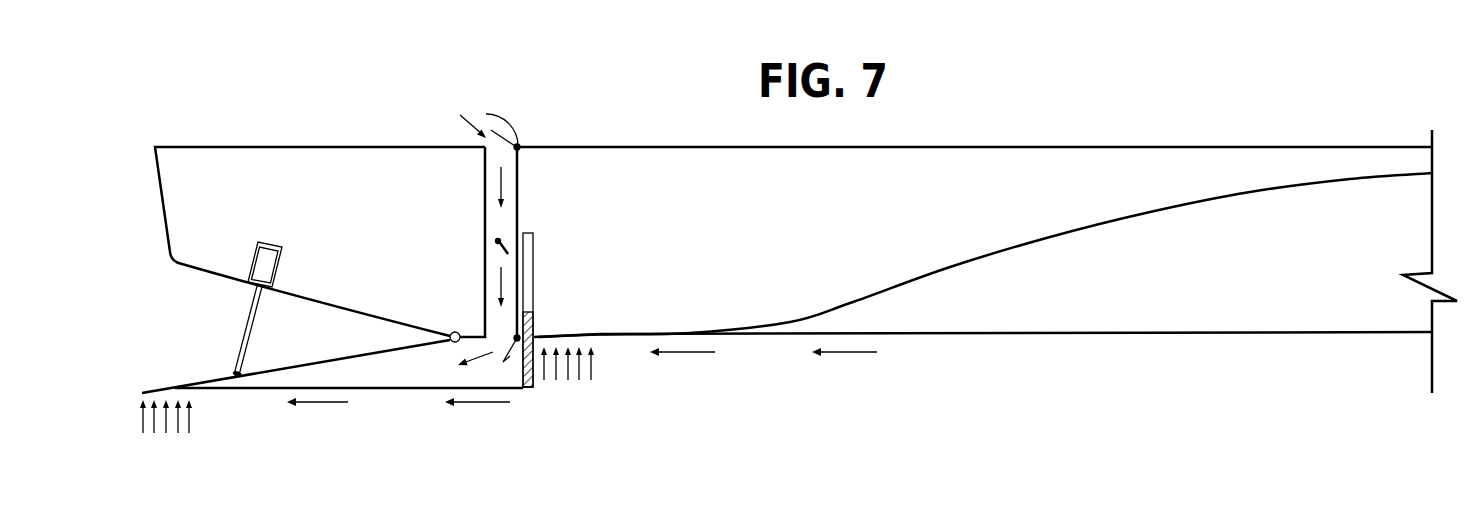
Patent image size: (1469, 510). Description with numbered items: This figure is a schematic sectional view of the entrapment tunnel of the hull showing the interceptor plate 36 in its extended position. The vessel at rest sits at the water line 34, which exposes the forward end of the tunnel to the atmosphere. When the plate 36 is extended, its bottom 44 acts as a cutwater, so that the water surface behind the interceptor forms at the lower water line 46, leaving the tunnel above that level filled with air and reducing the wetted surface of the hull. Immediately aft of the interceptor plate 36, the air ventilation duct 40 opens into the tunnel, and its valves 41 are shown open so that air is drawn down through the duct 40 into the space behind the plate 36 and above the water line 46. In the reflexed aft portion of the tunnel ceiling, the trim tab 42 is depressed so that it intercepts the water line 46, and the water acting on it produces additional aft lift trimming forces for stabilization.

The water line 34 is at (1142, 332).
The interceptor plate 36 is at (535, 318).
The air ventilation duct 40 is at (517, 185).
The valves 41 is at (503, 131).
The trim tab 42 is at (282, 368).
The bottom of the interceptor plate 44 is at (533, 387).
The water line 46 is at (393, 390).